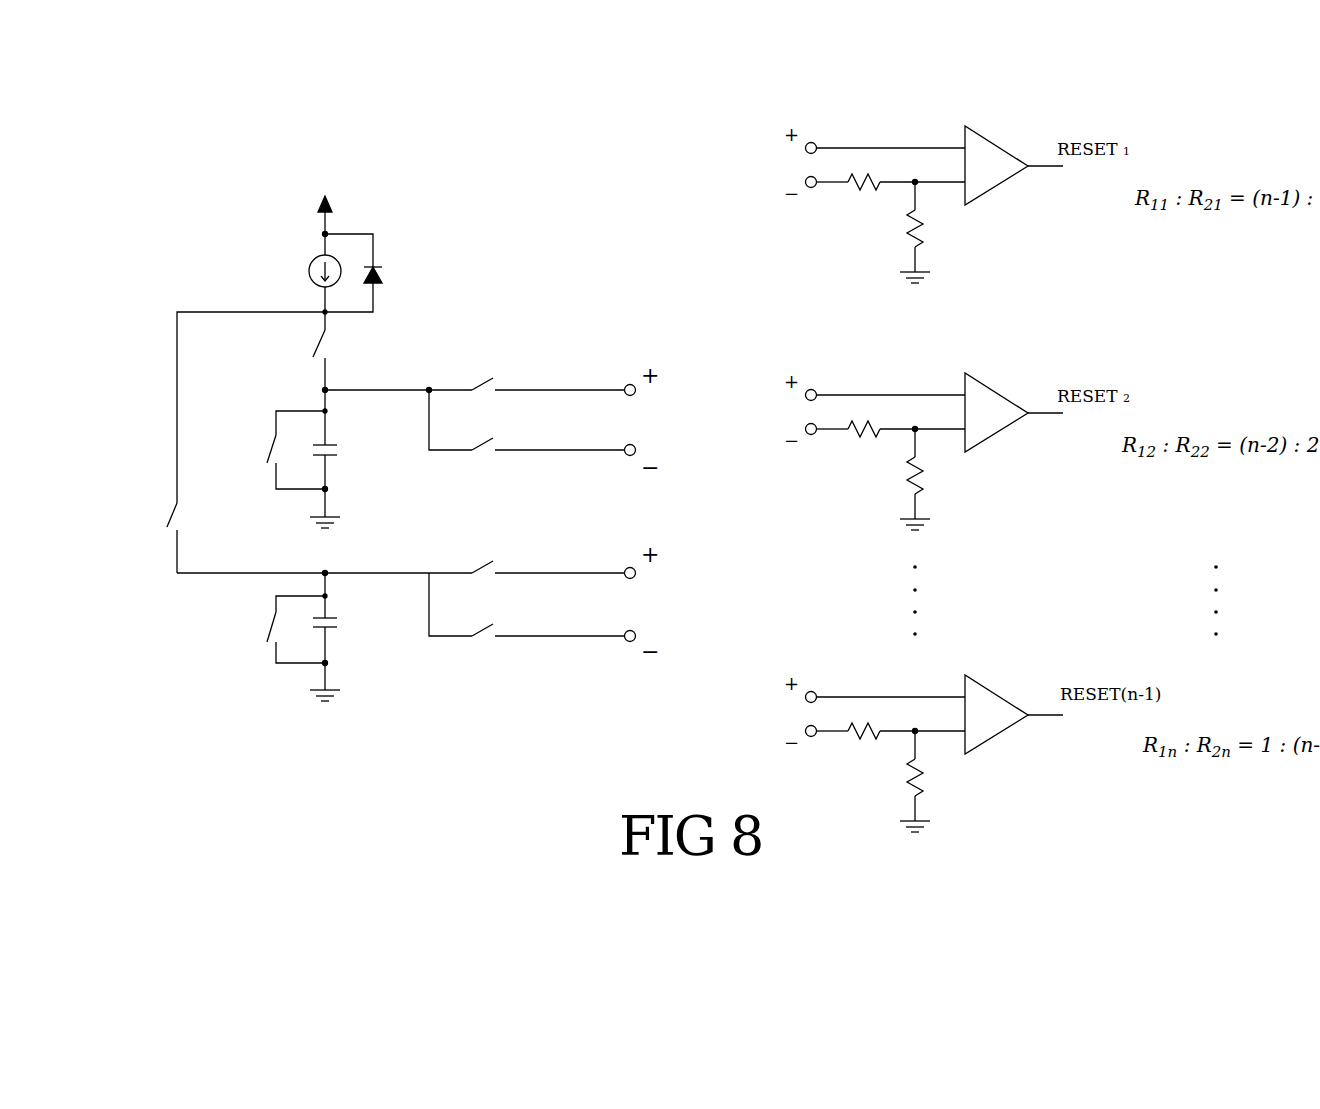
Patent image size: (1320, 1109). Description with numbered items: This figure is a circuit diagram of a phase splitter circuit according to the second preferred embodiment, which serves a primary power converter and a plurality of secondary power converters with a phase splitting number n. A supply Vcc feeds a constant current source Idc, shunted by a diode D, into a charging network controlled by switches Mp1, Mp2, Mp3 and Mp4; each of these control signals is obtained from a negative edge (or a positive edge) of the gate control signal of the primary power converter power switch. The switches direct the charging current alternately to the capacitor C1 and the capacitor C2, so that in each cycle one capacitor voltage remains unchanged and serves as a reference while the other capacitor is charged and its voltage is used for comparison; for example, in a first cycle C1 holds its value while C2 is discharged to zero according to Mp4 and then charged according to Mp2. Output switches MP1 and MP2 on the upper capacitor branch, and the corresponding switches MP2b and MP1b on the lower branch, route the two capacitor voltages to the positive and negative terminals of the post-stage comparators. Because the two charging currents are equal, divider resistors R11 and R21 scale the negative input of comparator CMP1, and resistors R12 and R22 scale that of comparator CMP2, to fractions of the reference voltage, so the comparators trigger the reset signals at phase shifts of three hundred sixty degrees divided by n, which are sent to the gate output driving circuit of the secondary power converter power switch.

The supply voltage Vcc is at (329, 203).
The DC current source Idc is at (308, 273).
The diode D is at (353, 273).
The control signal MP1 Mp1 is at (294, 351).
The control signal MP2 Mp2 is at (224, 442).
The control signal MP3 Mp3 is at (275, 450).
The control signal MP4 Mp4 is at (275, 629).
The capacitor C1 is at (342, 459).
The capacitor C2 is at (342, 637).
The control signal MP1 is at (550, 368).
The control signal MP2 is at (532, 423).
The control signal MP2 MP2b is at (550, 551).
The control signal MP1 MP1b is at (532, 607).
The resistor R11 is at (859, 199).
The resistor R21 is at (934, 232).
The comparator CMP1 is at (1014, 174).
The resistor R12 is at (859, 446).
The resistor R22 is at (934, 479).
The comparator CMP2 is at (1014, 421).